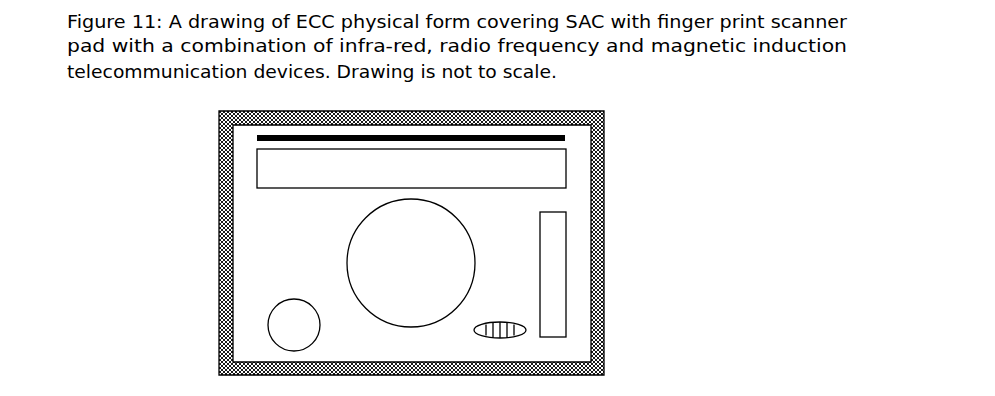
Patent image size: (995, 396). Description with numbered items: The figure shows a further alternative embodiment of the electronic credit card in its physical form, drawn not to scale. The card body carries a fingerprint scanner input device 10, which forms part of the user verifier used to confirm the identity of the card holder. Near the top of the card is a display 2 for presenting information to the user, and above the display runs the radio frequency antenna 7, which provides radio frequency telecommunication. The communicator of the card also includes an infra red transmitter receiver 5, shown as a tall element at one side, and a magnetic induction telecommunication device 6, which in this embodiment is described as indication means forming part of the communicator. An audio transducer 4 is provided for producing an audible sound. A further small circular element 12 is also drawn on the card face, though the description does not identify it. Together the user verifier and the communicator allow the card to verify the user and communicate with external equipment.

The display 2 is at (567, 171).
The audio transducer 4 is at (521, 342).
The infra red communication device 5 is at (568, 264).
The magnetic induction telecommunication device 6 is at (219, 188).
The antenna 7 is at (252, 137).
The fingerprint scanner input device 10 is at (346, 251).
The button / indicator 12 is at (267, 327).